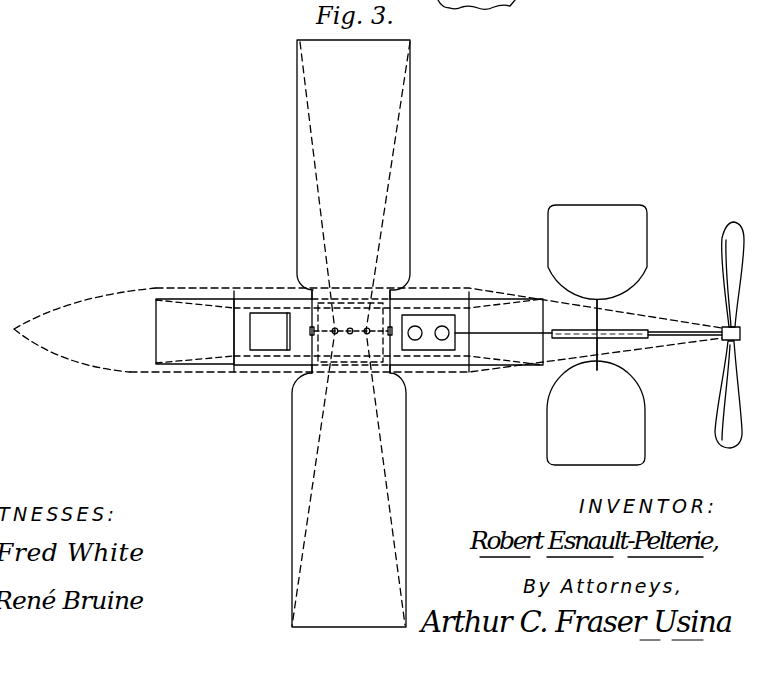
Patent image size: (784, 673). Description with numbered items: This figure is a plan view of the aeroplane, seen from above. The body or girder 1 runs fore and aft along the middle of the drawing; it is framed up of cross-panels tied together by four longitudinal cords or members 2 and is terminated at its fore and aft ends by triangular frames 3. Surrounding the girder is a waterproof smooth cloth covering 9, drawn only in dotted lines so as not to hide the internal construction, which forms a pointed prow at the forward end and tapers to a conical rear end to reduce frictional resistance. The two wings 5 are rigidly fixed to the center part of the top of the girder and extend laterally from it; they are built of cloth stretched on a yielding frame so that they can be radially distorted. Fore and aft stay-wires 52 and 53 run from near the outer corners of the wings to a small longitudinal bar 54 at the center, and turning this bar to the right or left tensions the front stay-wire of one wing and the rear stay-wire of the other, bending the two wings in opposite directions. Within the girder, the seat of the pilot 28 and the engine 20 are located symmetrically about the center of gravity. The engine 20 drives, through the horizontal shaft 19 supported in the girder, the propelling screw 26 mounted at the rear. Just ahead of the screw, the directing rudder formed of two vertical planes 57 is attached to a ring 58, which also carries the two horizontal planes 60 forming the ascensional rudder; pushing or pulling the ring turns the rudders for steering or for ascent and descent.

The body or girder 1 is at (251, 298).
The longitudinal cords or members 2 is at (425, 299).
The triangular frames 3 is at (498, 306).
The wings 5 is at (351, 333).
The cloth covering 9 is at (128, 373).
The horizontal shaft 19 is at (512, 334).
The engine 20 is at (430, 341).
The propelling screw 26 is at (726, 229).
The seat of the pilot 28 is at (255, 333).
The fore stay-wire 52 is at (318, 181).
The aft stay-wire 53 is at (395, 170).
The longitudinal bar 54 is at (351, 355).
The vertical planes (directing rudder) 57 is at (616, 333).
The ring 58 is at (601, 356).
The horizontal planes (ascensional rudder) 60 is at (597, 335).